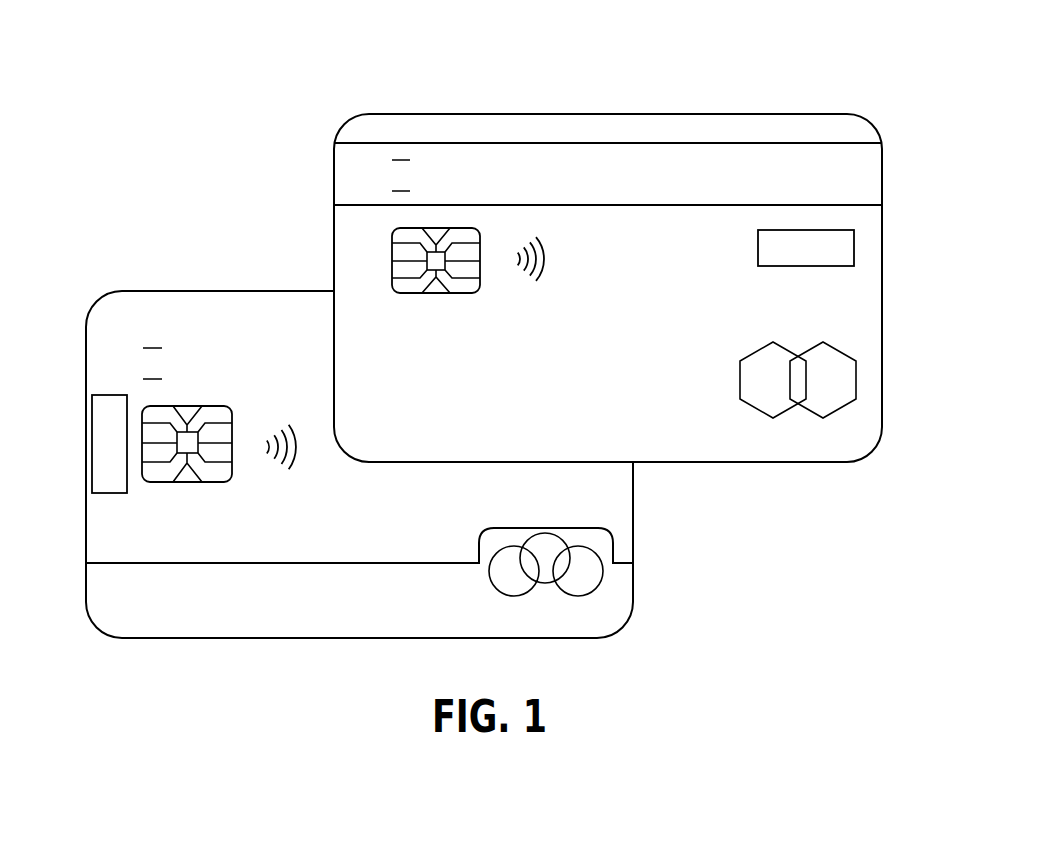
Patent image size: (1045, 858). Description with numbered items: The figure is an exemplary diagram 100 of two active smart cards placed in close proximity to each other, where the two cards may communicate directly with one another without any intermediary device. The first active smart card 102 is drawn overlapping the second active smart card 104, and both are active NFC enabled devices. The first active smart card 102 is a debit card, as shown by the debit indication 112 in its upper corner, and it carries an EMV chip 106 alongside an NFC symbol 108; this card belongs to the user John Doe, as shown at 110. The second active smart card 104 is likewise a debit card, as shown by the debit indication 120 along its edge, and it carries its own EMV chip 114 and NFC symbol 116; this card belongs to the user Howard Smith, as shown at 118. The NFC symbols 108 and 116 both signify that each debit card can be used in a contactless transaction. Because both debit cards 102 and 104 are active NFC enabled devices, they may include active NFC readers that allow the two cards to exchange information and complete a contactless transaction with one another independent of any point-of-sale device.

The exemplary diagram 100 is at (108, 36).
The first active smart card 102 is at (592, 114).
The second active smart card 104 is at (203, 291).
The EMV chip 106 is at (480, 241).
The NFC symbol 108 is at (546, 254).
The user name indication 110 is at (548, 404).
The debit card indication 112 is at (854, 250).
The EMV chip 114 is at (210, 406).
The NFC symbol 116 is at (297, 457).
The user name indication 118 is at (138, 607).
The debit card indication 120 is at (108, 493).